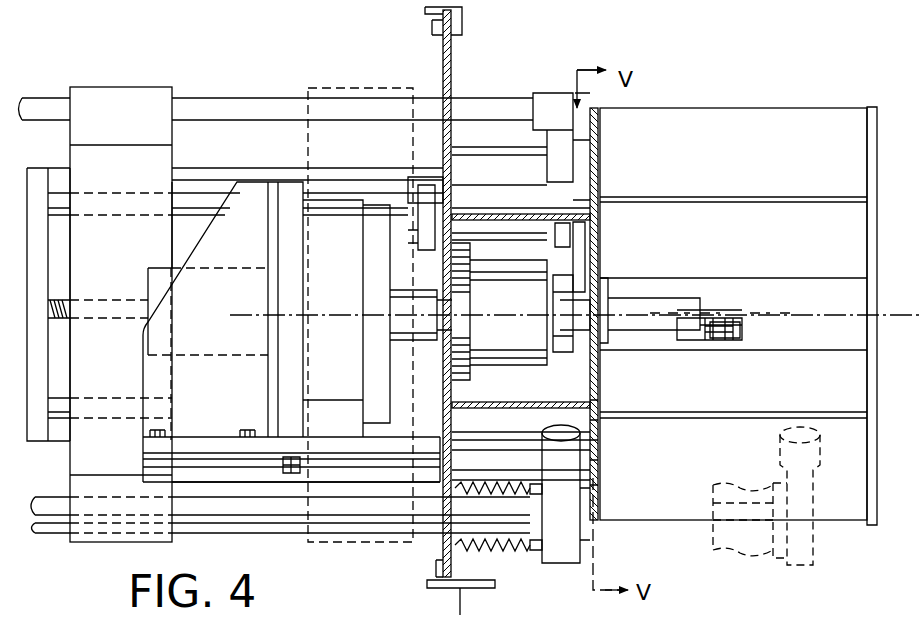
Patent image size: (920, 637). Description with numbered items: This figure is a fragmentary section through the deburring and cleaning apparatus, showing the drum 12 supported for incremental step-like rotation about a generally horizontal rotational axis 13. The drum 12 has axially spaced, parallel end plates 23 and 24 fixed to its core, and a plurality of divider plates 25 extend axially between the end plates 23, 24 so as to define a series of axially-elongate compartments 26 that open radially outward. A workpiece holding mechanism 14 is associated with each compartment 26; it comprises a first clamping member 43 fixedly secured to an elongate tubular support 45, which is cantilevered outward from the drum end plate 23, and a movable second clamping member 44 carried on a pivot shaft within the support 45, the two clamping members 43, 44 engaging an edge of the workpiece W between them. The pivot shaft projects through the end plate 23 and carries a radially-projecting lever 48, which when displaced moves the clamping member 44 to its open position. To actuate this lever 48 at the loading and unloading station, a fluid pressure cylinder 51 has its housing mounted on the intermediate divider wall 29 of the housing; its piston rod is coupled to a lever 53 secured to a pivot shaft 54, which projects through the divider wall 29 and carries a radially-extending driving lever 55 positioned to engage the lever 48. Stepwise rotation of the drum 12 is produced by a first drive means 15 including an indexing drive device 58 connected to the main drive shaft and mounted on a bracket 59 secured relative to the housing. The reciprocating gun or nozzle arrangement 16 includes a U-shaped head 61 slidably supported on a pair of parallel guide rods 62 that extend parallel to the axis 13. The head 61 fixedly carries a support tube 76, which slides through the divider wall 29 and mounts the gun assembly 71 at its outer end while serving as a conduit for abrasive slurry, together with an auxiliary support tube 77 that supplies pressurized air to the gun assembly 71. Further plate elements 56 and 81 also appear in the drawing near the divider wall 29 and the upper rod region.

The drum 12 is at (846, 105).
The rotational axis 13 is at (884, 318).
The workpiece holding mechanism 14 is at (740, 300).
The first drive means 15 is at (322, 442).
The reciprocating gun or nozzle arrangement 16 is at (212, 96).
The end plate 23 is at (598, 240).
The end plate 24 is at (876, 218).
The divider plate 25 is at (754, 122).
The compartment 26 is at (698, 146).
The intermediate divider wall 29 is at (452, 52).
The first clamping member 43 is at (722, 340).
The second clamping member 44 is at (718, 312).
The tubular support 45 is at (662, 305).
The lever 48 is at (578, 353).
The linear driver (fluid pressure cylinder) 51 is at (455, 165).
The lever 53 is at (425, 218).
The pivot shaft 54 is at (522, 236).
The driving lever 55 is at (598, 258).
The lower plate 56 is at (488, 403).
The indexing drive device 58 is at (322, 220).
The bracket 59 is at (247, 200).
The U-shaped head 61 is at (135, 95).
The guide rod 62 is at (63, 200).
The gun assembly 71 is at (556, 565).
The support tube 76 is at (370, 520).
The auxiliary support tube 77 is at (332, 528).
The upper rod 81 is at (291, 105).
The workpiece W is at (775, 313).